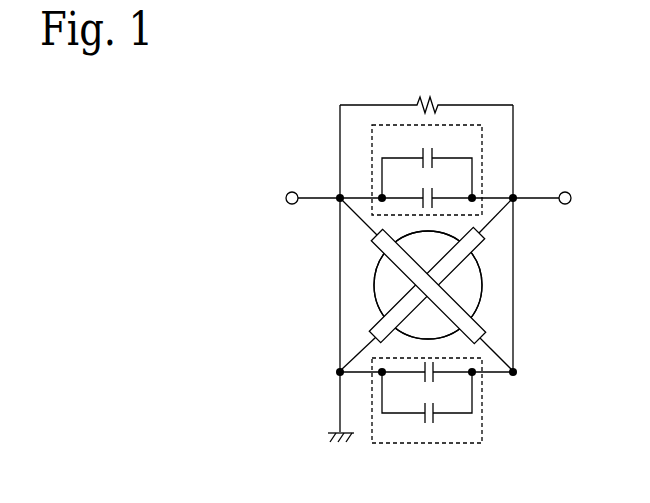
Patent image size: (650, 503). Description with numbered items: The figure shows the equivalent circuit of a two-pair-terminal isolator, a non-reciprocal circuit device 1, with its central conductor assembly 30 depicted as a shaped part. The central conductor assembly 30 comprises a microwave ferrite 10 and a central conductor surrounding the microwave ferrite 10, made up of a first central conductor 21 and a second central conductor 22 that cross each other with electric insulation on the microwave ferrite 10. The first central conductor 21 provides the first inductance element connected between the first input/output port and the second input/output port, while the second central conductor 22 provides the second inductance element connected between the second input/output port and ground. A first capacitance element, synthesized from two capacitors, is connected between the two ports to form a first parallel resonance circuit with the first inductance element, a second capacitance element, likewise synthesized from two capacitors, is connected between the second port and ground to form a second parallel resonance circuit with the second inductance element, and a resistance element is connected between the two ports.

The non-reciprocal circuit device 1 is at (299, 113).
The microwave ferrite 10 is at (464, 285).
The first central conductor 21 is at (393, 286).
The second central conductor 22 is at (458, 284).
The central conductor assembly 30 is at (388, 285).